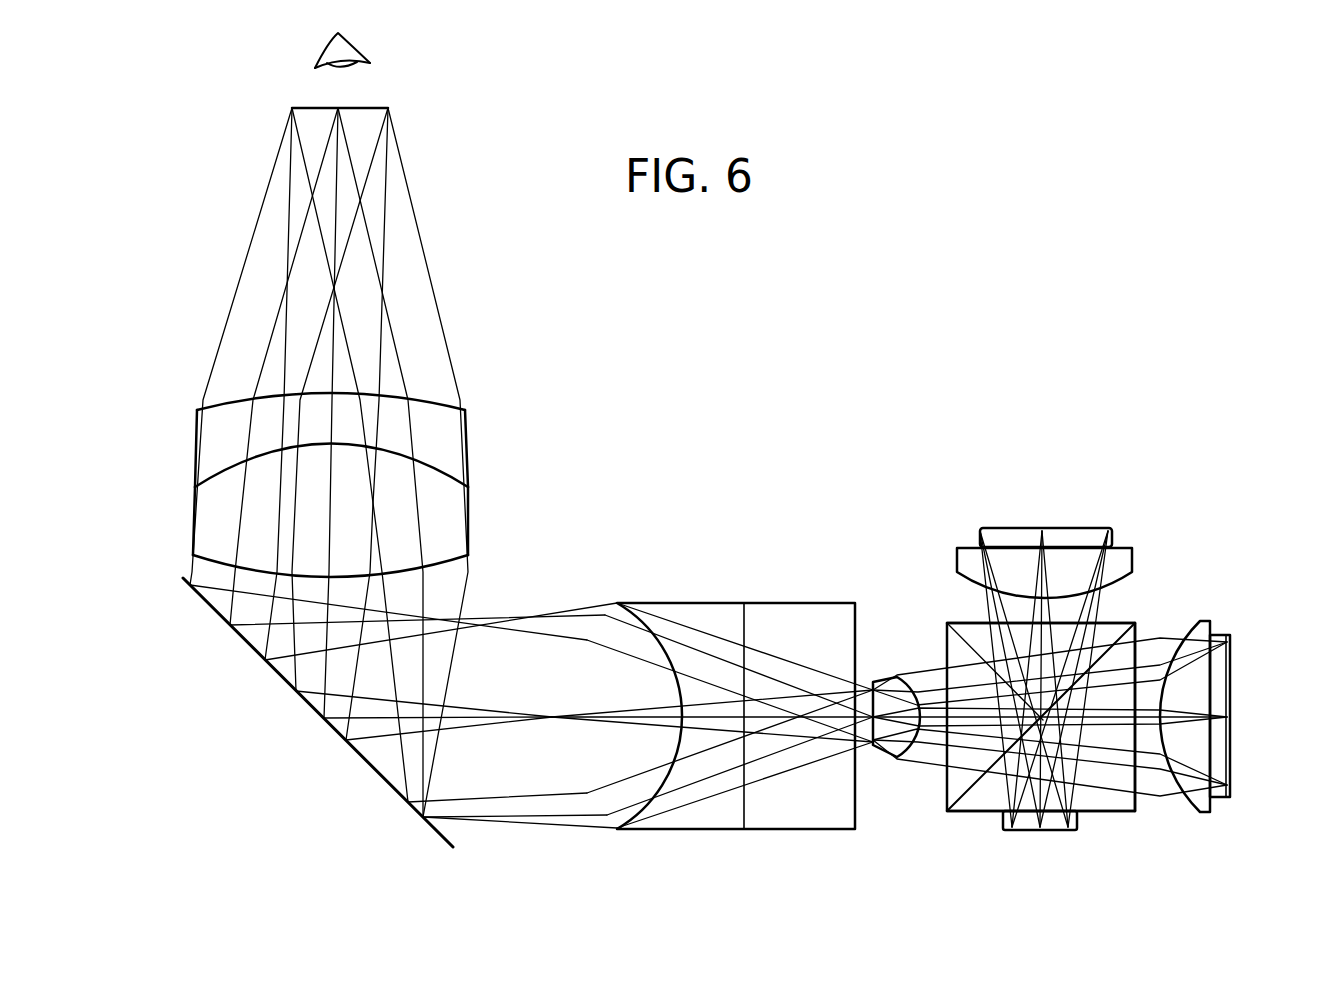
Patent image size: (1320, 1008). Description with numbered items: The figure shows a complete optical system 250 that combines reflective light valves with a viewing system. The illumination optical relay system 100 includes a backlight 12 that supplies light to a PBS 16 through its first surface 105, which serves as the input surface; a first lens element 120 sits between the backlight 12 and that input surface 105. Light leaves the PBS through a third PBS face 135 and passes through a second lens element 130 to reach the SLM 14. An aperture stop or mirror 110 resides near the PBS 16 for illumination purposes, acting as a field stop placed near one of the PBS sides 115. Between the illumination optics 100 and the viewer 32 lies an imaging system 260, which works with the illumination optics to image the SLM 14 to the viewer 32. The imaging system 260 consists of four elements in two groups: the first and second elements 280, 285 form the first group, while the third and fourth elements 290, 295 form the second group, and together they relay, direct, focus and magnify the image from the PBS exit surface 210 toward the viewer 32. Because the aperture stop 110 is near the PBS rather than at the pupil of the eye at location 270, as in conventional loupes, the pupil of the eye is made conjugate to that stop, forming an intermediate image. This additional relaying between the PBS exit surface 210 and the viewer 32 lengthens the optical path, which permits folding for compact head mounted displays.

The backlight 12 is at (1075, 528).
The SLM 14 is at (1233, 675).
The PBS 16 is at (977, 815).
The viewer 32 is at (362, 48).
The illumination optical relay system 100 is at (1098, 837).
The first surface 105 is at (962, 620).
The aperture stop 110 is at (1023, 832).
The PBS side 115 is at (1117, 817).
The first lens element 120 is at (1133, 558).
The second lens element 130 is at (1207, 620).
The third PBS face 135 is at (1138, 635).
The PBS exit surface 210 is at (947, 643).
The complete optical system 250 is at (858, 865).
The imaging system 260 is at (612, 355).
The location of the pupil of the eye 270 is at (370, 108).
The first element 280 is at (887, 680).
The second element 285 is at (722, 848).
The third element 290 is at (475, 520).
The fourth element 295 is at (472, 440).